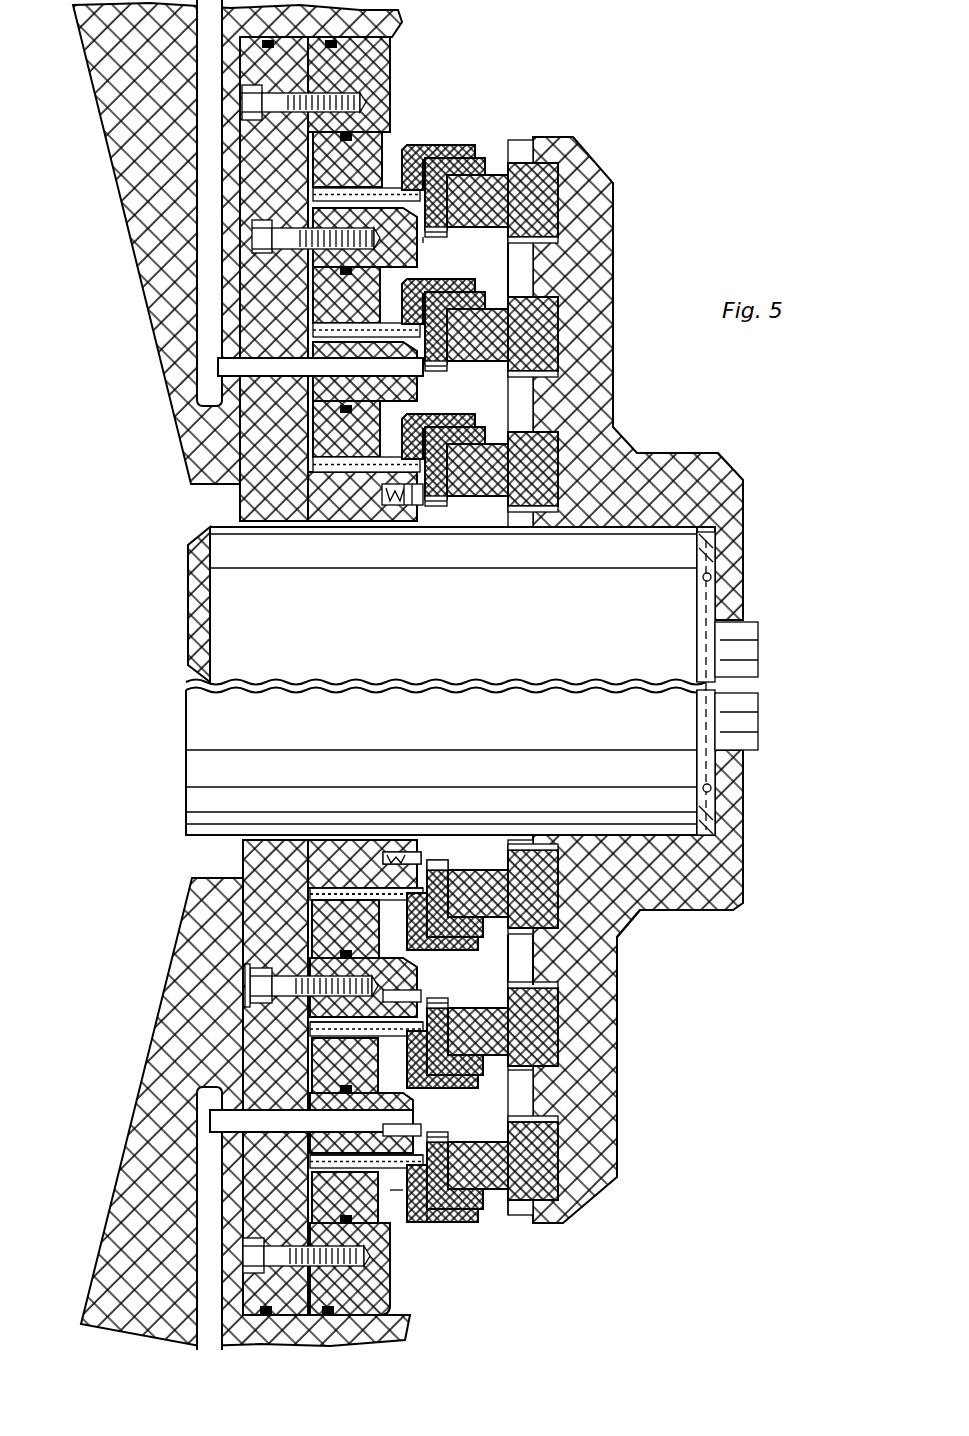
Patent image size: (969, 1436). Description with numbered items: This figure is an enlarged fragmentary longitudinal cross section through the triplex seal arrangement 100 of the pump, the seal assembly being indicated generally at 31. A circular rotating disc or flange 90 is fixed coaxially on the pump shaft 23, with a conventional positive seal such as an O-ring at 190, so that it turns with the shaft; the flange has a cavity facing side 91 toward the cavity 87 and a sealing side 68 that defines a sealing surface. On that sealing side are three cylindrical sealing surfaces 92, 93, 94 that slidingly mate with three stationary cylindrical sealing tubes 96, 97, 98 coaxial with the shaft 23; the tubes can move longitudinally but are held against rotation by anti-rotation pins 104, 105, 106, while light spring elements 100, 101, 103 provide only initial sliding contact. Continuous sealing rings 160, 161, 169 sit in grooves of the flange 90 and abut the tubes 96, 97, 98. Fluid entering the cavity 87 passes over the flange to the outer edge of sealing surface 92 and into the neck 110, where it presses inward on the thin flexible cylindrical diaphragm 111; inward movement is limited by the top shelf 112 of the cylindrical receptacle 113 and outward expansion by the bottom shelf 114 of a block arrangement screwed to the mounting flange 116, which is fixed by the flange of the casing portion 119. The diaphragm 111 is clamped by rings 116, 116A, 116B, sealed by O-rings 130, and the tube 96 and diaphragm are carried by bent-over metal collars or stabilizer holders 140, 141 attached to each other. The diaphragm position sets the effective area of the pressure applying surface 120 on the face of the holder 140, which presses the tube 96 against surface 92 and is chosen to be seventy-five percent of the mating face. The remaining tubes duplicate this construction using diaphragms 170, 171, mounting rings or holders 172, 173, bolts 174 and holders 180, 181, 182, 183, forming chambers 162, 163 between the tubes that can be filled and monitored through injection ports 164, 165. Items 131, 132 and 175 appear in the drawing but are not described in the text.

The shaft 23 is at (488, 653).
The clutch assembly 31 is at (510, 112).
The sealing side 68 is at (527, 1218).
The cavity 87 is at (683, 1280).
The rotating disc or flange 90 is at (625, 362).
The cavity facing side 91 is at (618, 1126).
The sealing surface 92 is at (498, 1200).
The sealing surface 93 is at (512, 1070).
The sealing surface 94 is at (618, 933).
The sealing tube 96 is at (498, 172).
The sealing tube 97 is at (510, 285).
The sealing tube 98 is at (510, 430).
The spring element 100 is at (388, 858).
The spring element 101 is at (537, 980).
The spring element 103 is at (510, 1138).
The anti-rotation pin 104 is at (437, 860).
The anti-rotation pin 105 is at (510, 990).
The anti-rotation pin 106 is at (510, 1170).
The neck 110 is at (386, 1180).
The flexible cylindrical diaphragm 111 is at (328, 1200).
The top cylindrical shelf 112 is at (316, 1160).
The cylindrical receptacle 113 is at (312, 1100).
The bottom shelf 114 is at (300, 1225).
The mounting flange 116 is at (297, 1305).
The clamping ring 116A is at (300, 1250).
The clamping ring 116B is at (390, 1313).
The casing portion 119 is at (117, 160).
The pressure applying surface 120 is at (393, 1190).
The O-ring seal 130 is at (338, 1320).
The seal 131 is at (262, 1322).
The plate edge 132 is at (394, 1236).
The stabilizer holder 140 is at (430, 1218).
The stabilizer holder 141 is at (480, 1215).
The sealing ring 160 is at (554, 200).
The sealing ring 161 is at (554, 328).
The chamber 162 is at (486, 267).
The chamber 163 is at (486, 407).
The injection port 164 is at (212, 1150).
The injection port 165 is at (204, 258).
The sealing ring 169 is at (554, 466).
The diaphragm 170 is at (316, 1030).
The diaphragm 171 is at (326, 890).
The mounting ring 172 is at (330, 1060).
The mounting ring 173 is at (306, 930).
The bolt 174 is at (330, 987).
The washer 175 is at (268, 978).
The holder 180 is at (466, 872).
The holder 181 is at (510, 942).
The holder 182 is at (485, 1080).
The holder 183 is at (482, 1096).
The positive seal 190 is at (712, 577).